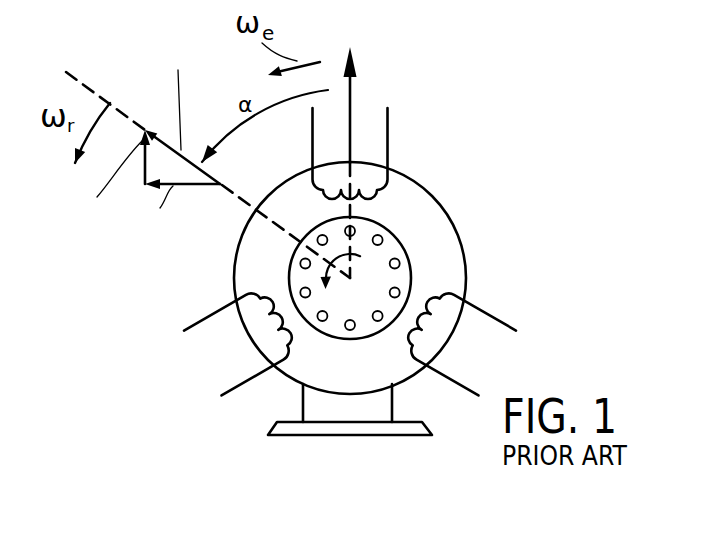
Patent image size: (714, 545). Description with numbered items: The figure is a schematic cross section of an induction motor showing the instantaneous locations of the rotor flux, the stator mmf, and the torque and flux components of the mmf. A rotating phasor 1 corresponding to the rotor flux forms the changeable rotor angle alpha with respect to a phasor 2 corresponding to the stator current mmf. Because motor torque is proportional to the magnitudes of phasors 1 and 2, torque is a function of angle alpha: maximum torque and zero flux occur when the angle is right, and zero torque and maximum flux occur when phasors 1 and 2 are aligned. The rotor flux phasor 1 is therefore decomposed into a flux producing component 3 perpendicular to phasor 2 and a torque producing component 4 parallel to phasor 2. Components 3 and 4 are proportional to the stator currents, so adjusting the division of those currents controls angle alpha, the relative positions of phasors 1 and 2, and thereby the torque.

The rotating phasor 1 is at (163, 134).
The phasor 2 is at (352, 88).
The flux producing component 3 is at (187, 186).
The torque producing component 4 is at (142, 179).